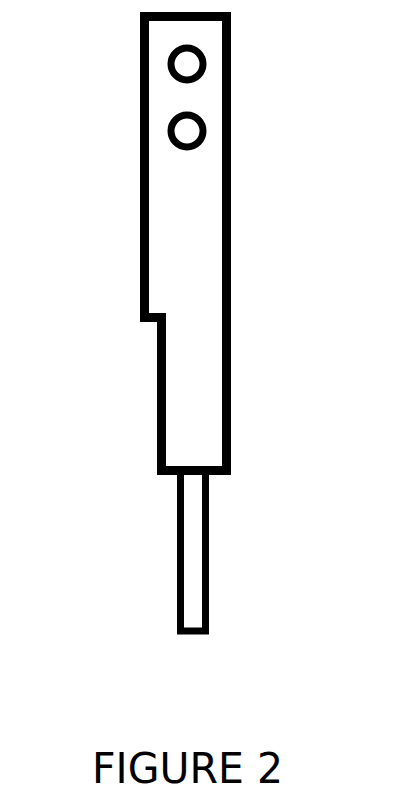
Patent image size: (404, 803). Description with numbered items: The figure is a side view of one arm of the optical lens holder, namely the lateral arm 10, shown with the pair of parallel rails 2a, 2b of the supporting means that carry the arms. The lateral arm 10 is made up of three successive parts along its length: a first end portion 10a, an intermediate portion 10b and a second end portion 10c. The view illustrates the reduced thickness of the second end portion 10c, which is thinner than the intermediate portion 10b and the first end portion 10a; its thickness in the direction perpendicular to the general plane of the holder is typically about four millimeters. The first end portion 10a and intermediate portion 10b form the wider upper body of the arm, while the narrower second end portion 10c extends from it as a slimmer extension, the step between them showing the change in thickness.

The rail 2a is at (167, 63).
The rail 2b is at (168, 138).
The lateral arm 10 is at (140, 272).
The first end portion 10a is at (230, 95).
The intermediate portion 10b is at (232, 266).
The second end portion 10c is at (209, 554).